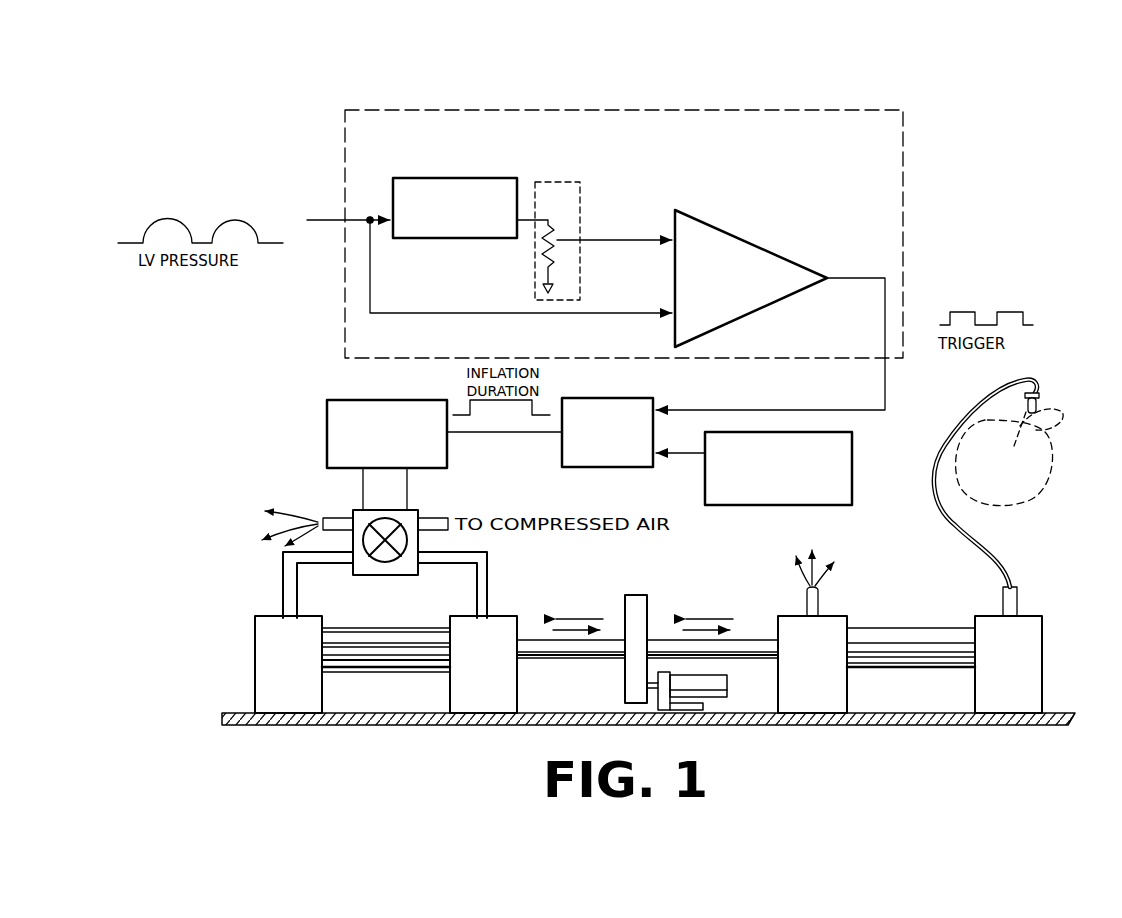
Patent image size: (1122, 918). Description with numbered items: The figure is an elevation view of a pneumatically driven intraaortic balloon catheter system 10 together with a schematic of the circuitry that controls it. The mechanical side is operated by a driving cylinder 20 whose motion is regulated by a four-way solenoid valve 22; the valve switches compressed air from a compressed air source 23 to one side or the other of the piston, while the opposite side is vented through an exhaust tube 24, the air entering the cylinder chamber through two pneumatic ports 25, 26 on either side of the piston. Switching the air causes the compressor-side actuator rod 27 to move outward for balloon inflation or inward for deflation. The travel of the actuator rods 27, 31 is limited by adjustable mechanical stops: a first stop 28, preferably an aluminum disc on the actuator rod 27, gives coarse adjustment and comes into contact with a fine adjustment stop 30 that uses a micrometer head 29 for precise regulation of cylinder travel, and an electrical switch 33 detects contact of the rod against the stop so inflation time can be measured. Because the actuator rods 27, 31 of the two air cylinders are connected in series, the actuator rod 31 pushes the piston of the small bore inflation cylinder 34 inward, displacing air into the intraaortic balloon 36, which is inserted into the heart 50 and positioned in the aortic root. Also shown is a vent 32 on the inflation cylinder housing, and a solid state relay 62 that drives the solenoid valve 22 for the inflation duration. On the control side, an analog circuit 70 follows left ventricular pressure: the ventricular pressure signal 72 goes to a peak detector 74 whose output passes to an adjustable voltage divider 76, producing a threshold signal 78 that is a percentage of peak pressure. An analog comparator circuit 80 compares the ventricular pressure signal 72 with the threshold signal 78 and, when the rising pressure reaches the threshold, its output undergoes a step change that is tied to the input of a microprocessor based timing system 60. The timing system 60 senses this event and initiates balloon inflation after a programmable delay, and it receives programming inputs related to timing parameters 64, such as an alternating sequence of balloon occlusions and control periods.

The pneumatically driven intraaortic balloon catheter system 10 is at (1032, 753).
The driving cylinder 20 is at (360, 665).
The solenoid valve 22 is at (356, 510).
The compressed air source 23 is at (435, 518).
The exhaust tube 24 is at (335, 518).
The pneumatic port 25 is at (283, 592).
The pneumatic port 26 is at (487, 585).
The actuator rod 27 is at (553, 660).
The first stop 28 is at (630, 595).
The micrometer head 29 is at (714, 695).
The fine adjustment stop 30 is at (672, 710).
The actuator rod 31 is at (750, 660).
The vent 32 is at (820, 604).
The electrical switch 33 is at (656, 706).
The inflation cylinder 34 is at (873, 667).
The intraaortic balloon 36 is at (1040, 398).
The heart 50 is at (1040, 486).
The microprocessor based timing system 60 is at (605, 398).
The solid state relay 62 is at (350, 400).
The programming inputs related to timing parameters 64 is at (852, 458).
The analog circuit 70 is at (607, 110).
The ventricular pressure signal 72 is at (370, 218).
The peak detector 74 is at (443, 178).
The adjustable voltage divider 76 is at (560, 182).
The threshold signal 78 is at (615, 240).
The analog comparator circuit 80 is at (751, 275).